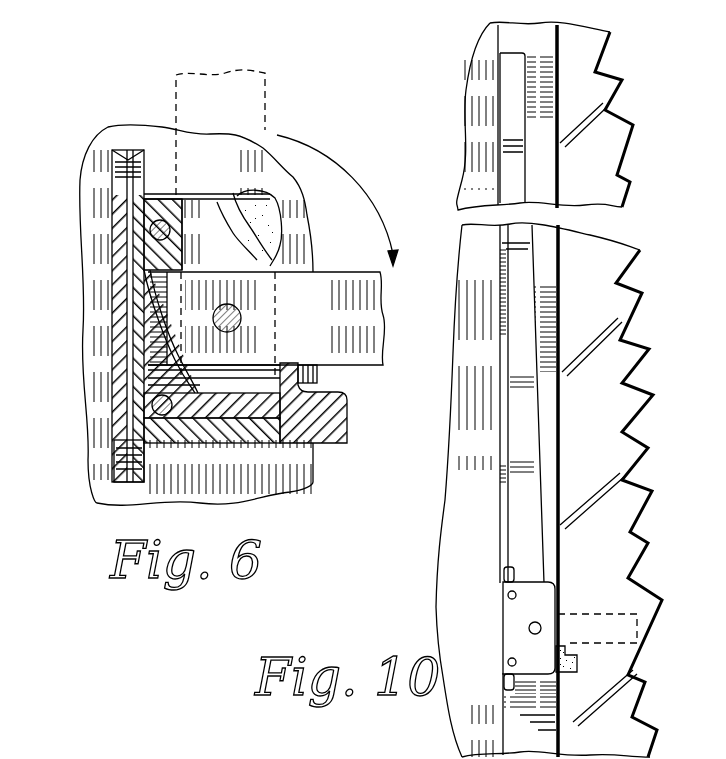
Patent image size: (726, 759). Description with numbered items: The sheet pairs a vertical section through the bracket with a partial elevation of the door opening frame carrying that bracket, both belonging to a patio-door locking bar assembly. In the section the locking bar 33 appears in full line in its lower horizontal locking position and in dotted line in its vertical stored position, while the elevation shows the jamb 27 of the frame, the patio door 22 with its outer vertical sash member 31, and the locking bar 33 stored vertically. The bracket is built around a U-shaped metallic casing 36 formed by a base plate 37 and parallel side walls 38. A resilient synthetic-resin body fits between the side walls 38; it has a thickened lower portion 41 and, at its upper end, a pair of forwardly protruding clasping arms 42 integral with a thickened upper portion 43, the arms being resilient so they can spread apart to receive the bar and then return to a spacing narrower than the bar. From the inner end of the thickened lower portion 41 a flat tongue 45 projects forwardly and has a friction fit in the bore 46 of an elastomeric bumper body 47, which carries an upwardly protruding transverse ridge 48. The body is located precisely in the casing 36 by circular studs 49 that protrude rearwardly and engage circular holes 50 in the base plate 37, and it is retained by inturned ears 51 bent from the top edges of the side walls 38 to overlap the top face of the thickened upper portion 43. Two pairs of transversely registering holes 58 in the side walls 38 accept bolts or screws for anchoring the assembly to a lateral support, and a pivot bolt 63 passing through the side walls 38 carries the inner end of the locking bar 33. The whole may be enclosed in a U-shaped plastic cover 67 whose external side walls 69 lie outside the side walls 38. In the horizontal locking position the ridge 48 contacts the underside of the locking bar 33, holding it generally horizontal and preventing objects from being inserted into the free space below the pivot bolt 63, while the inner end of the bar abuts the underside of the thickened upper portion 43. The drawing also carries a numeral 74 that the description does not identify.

In FIG. 10, the patio door 22 is at (652, 530).
In FIG. 10, the jamb 27 is at (500, 503).
In FIG. 6, the outer vertical sash member 31 is at (163, 482).
In FIG. 10, the outer vertical sash member 31 is at (505, 357).
In FIG. 6, the locking bar 33 is at (349, 276).
In FIG. 10, the locking bar 33 is at (500, 247).
In FIG. 10, the casing 36 is at (515, 617).
In FIG. 6, the base plate 37 is at (128, 207).
In FIG. 6, the side walls 38 is at (250, 196).
In FIG. 6, the thickened lower portion 41 is at (163, 430).
In FIG. 6, the clasping arms 42 is at (218, 243).
In FIG. 6, the thickened upper portion 43 is at (162, 199).
In FIG. 6, the flat tongue 45 is at (243, 420).
In FIG. 6, the bore 46 is at (307, 483).
In FIG. 6, the bumper body 47 is at (343, 443).
In FIG. 10, the bumper body 47 is at (577, 663).
In FIG. 6, the transverse ridge 48 is at (313, 375).
In FIG. 6, the circular studs 49 is at (125, 228).
In FIG. 6, the circular holes 50 is at (130, 233).
In FIG. 6, the inturned ears 51 is at (148, 192).
In FIG. 10, the transversely-registering holes 58 is at (510, 595).
In FIG. 6, the pivot bolt 63 is at (241, 322).
In FIG. 6, the cover 67 is at (123, 343).
In FIG. 6, the external side walls 69 is at (272, 230).
In FIG. 6, the seal ring 74 is at (147, 405).